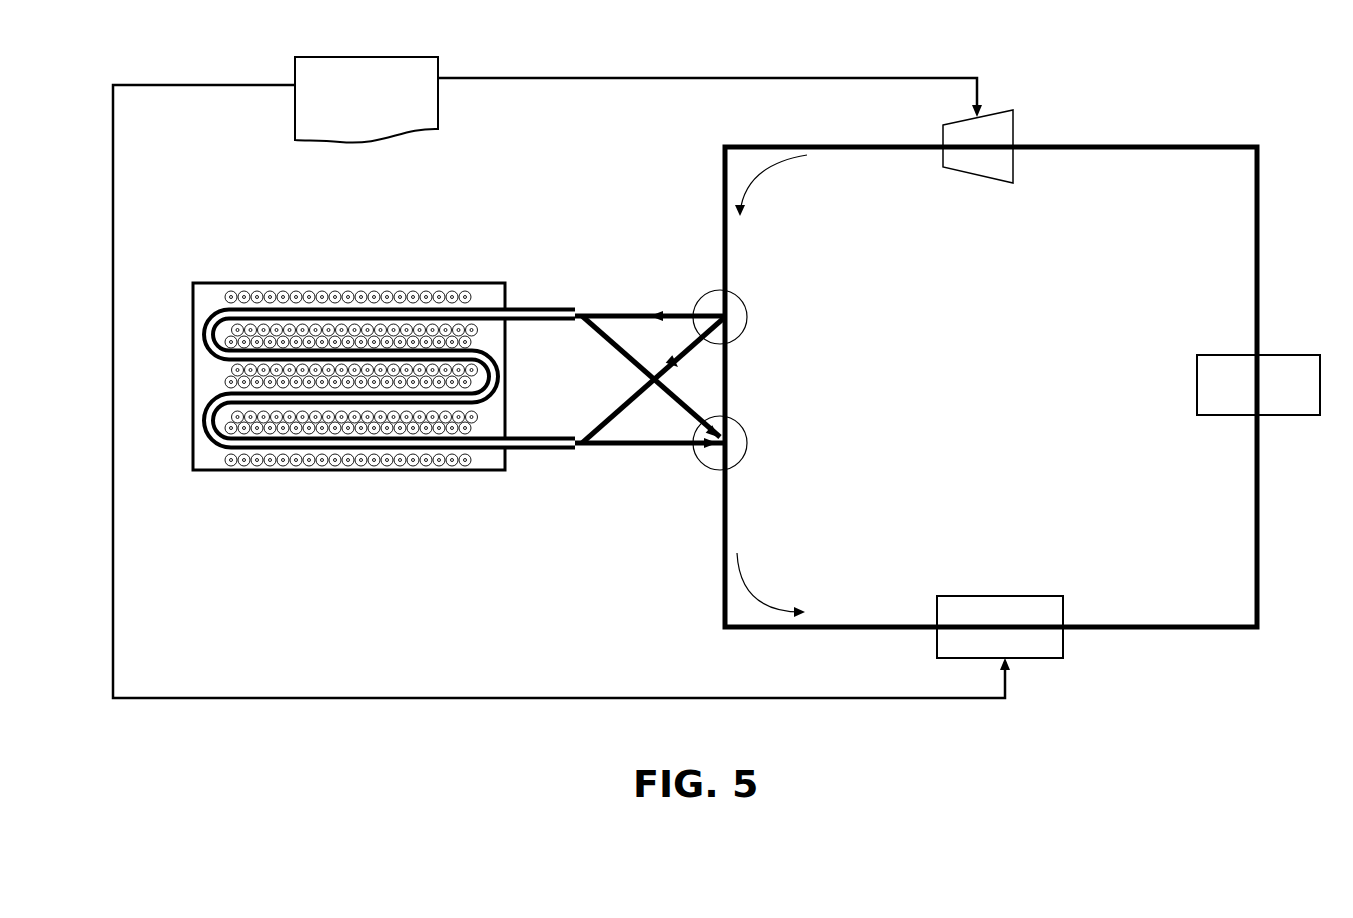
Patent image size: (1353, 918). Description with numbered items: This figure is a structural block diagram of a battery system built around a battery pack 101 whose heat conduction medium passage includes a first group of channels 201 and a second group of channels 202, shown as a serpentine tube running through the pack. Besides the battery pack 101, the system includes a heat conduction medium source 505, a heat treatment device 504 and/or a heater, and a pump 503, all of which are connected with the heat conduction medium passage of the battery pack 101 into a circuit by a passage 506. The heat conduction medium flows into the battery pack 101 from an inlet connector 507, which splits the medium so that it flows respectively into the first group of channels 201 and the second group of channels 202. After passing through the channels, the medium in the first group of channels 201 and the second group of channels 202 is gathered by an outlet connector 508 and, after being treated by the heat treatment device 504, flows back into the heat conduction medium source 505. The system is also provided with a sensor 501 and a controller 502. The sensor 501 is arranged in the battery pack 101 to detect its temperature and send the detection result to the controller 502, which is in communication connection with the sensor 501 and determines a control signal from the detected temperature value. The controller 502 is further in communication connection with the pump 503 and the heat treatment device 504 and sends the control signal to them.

The battery pack 101 is at (235, 285).
The sensor 501 is at (352, 375).
The controller 502 is at (353, 303).
The first group of channels 201 is at (623, 313).
The second group of channels 202 is at (633, 403).
The pump 503 is at (973, 177).
The heat treatment device 504 is at (1006, 600).
The heat conduction medium source 505 is at (1207, 380).
The passage 506 is at (1143, 147).
The inlet connector 507 is at (747, 313).
The outlet connector 508 is at (747, 443).